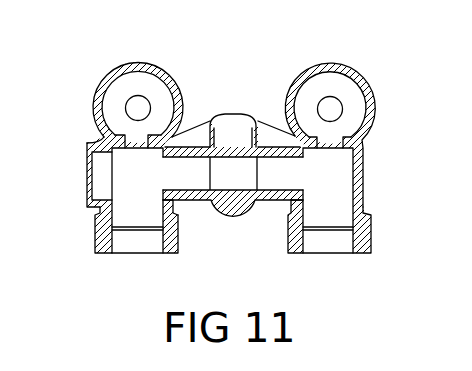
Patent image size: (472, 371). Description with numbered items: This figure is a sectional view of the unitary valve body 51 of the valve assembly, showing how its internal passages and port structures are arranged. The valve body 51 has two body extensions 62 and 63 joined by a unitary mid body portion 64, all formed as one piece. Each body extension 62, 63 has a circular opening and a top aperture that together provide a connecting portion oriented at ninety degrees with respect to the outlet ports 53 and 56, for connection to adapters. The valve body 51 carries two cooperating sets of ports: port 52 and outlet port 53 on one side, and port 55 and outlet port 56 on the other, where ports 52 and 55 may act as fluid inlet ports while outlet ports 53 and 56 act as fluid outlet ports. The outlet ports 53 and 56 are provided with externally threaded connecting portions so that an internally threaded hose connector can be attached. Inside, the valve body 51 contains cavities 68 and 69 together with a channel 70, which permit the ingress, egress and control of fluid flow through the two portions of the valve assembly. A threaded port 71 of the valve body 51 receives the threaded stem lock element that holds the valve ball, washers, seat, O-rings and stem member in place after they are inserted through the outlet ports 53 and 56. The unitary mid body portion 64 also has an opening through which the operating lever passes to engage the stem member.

The valve body 51 is at (224, 104).
The port 52 is at (146, 82).
The outlet port 53 is at (128, 245).
The port 55 is at (330, 84).
The outlet port 56 is at (338, 247).
The body extension 62 is at (104, 81).
The body extension 63 is at (370, 90).
The unitary mid body portion 64 is at (188, 202).
The cavity 68 is at (122, 165).
The cavity 69 is at (337, 177).
The channel 70 is at (281, 177).
The threaded port 71 is at (87, 183).